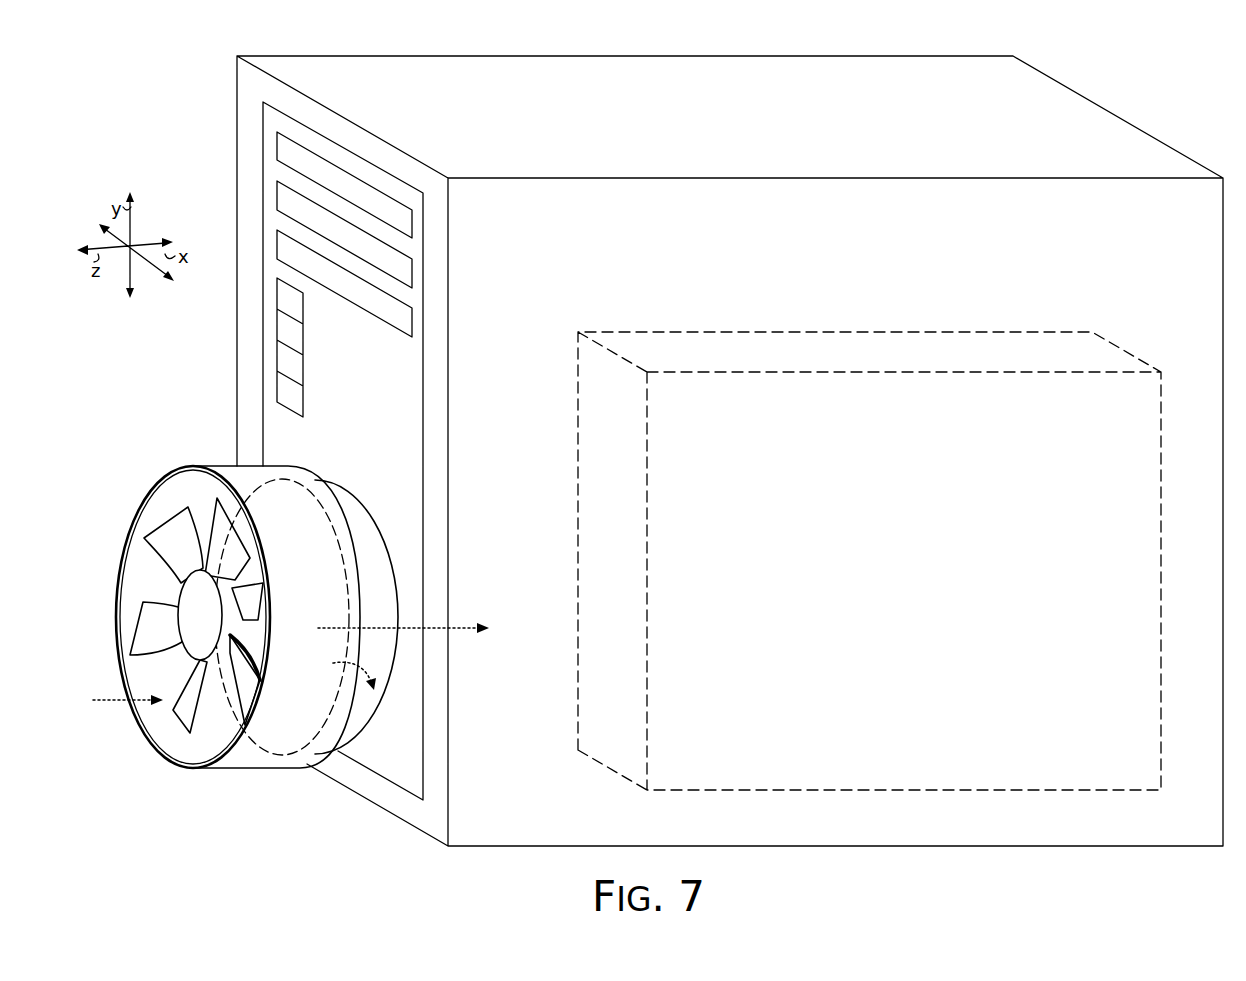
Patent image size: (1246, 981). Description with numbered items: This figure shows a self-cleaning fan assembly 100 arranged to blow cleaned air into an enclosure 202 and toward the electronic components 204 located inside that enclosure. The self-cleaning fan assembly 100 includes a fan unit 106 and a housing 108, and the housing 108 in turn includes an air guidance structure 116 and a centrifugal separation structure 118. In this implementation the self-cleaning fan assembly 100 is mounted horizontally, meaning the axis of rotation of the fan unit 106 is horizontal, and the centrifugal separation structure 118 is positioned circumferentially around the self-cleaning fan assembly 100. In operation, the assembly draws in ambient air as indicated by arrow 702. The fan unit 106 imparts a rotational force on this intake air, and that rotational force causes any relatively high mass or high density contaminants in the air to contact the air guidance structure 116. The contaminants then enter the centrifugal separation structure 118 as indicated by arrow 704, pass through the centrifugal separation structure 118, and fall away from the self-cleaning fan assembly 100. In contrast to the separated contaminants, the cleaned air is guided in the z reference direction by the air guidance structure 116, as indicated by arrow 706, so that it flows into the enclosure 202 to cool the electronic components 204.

The enclosure 202 is at (236, 125).
The electronic components 204 is at (1060, 563).
The self-cleaning fan assembly 100 is at (203, 442).
The housing 108 is at (237, 768).
The centrifugal separation structure 118 is at (318, 480).
The fan unit 106 is at (141, 603).
The air guidance structure 116 is at (131, 529).
The arrow indicating ambient air intake 702 is at (124, 703).
The arrow indicating contaminant flow 704 is at (336, 670).
The arrow indicating cleaned air flow 706 is at (335, 627).